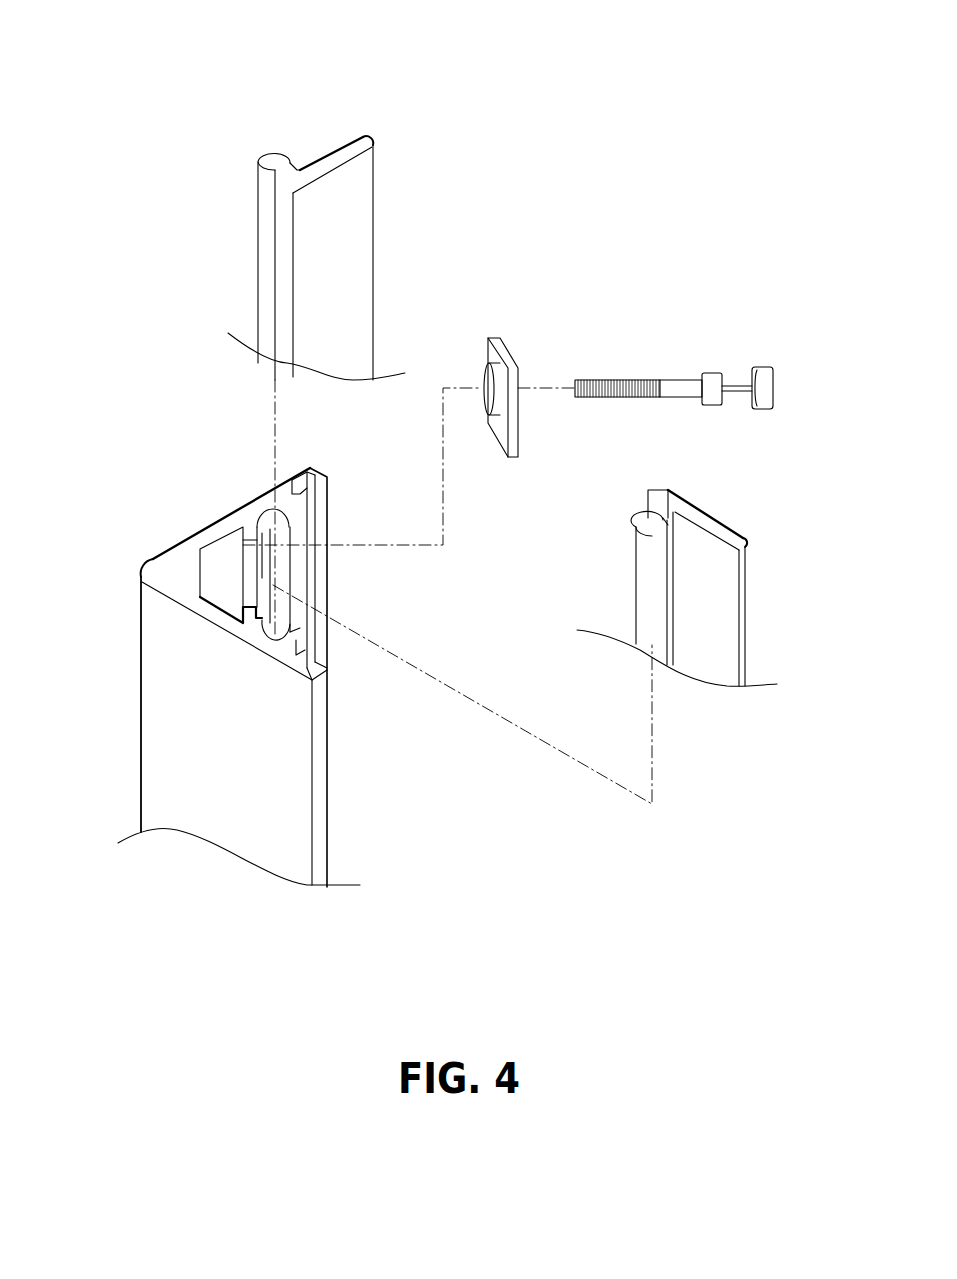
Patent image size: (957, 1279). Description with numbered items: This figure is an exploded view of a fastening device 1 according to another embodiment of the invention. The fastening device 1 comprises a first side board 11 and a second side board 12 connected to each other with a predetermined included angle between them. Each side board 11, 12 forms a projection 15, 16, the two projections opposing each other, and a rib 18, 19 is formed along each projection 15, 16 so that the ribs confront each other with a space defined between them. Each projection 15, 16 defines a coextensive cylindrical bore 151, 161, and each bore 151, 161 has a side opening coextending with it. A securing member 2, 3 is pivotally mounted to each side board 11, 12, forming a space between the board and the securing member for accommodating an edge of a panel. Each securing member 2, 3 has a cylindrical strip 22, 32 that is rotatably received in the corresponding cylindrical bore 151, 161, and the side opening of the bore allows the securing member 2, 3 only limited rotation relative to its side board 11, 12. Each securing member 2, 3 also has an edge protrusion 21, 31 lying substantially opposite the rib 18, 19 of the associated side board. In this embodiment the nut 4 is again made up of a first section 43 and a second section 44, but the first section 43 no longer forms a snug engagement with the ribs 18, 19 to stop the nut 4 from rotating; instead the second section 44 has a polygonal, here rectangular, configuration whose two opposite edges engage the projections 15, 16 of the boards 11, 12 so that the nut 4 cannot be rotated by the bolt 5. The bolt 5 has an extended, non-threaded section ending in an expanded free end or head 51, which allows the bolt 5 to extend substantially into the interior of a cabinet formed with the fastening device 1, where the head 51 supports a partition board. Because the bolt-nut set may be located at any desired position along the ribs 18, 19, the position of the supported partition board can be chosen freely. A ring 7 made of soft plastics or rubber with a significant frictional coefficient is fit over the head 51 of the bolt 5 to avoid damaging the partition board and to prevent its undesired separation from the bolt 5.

The fastening device 1 is at (250, 645).
The first side board 11 is at (302, 805).
The second side board 12 is at (310, 472).
The projection 15 is at (223, 585).
The cylindrical bore 151 is at (258, 636).
The projection 16 is at (294, 511).
The cylindrical bore 161 is at (260, 520).
The rib 18 is at (244, 607).
The rib 19 is at (250, 536).
The securing member 2 is at (687, 559).
The edge protrusion 21 is at (658, 496).
The cylindrical strip 22 is at (645, 583).
The securing member 3 is at (318, 209).
The edge protrusion 31 is at (287, 257).
The cylindrical strip 32 is at (272, 150).
The nut 4 is at (509, 336).
The first section 43 is at (490, 375).
The second section 44 is at (508, 360).
The bolt 5 is at (663, 339).
The head 51 is at (707, 374).
The ring 7 is at (763, 372).